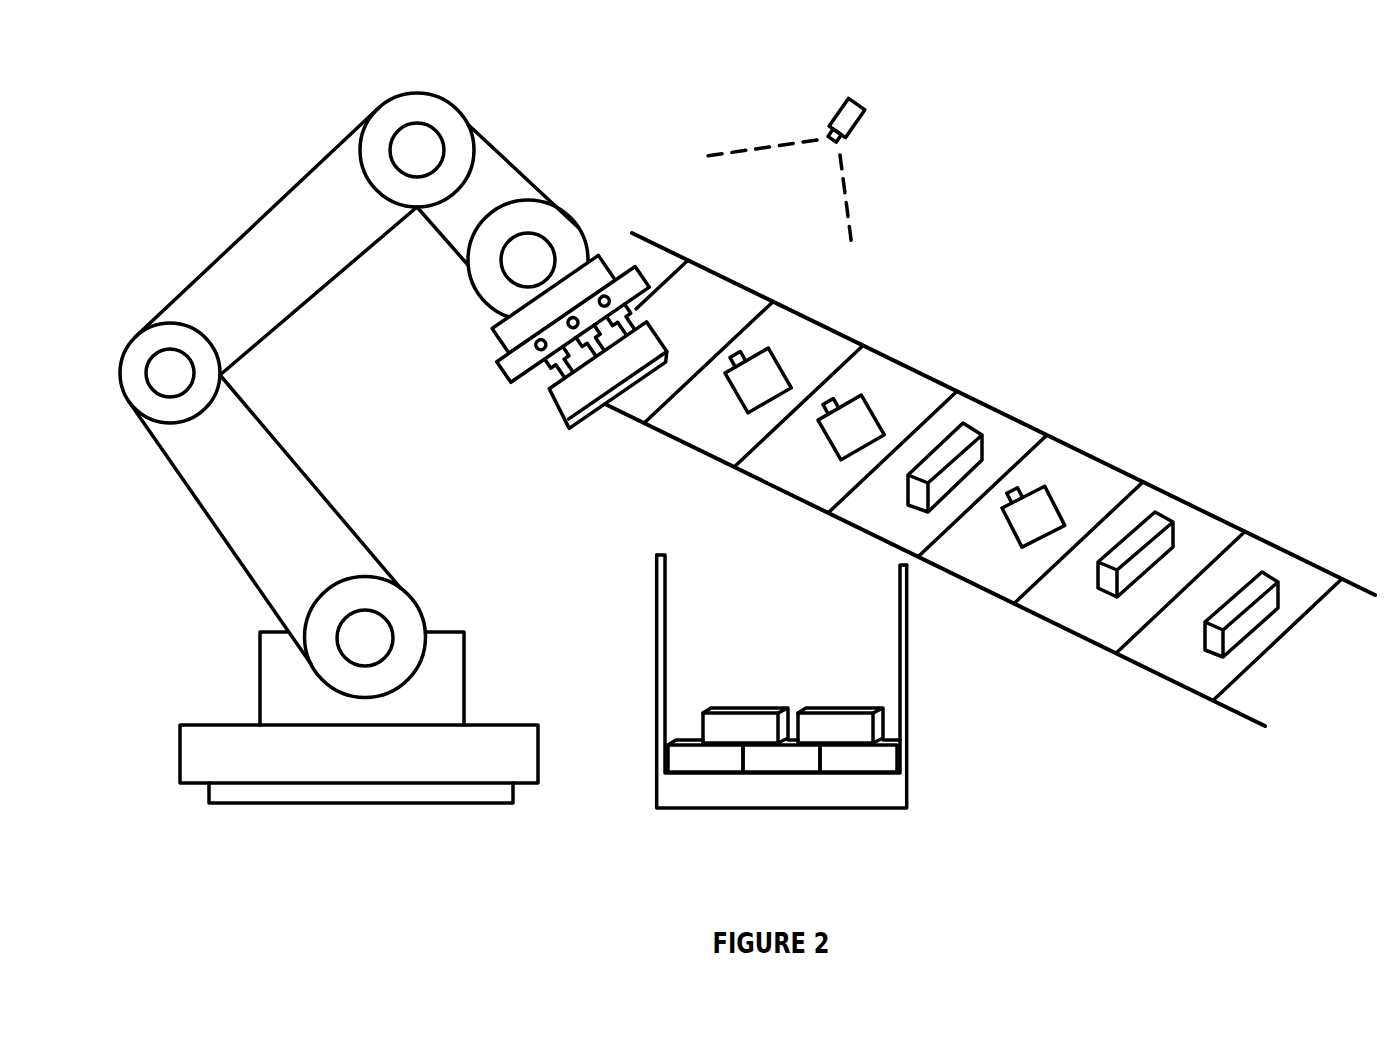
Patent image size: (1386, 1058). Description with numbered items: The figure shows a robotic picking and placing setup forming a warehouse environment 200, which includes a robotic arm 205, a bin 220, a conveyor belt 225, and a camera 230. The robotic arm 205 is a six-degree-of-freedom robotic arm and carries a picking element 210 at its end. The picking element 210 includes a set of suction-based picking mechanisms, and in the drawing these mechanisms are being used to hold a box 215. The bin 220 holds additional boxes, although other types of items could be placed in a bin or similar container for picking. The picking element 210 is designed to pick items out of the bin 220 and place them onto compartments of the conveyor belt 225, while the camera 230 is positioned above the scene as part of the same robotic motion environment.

The warehouse environment 200 is at (155, 85).
The robotic arm 205 is at (110, 365).
The picking element 210 is at (486, 367).
The box 215 is at (602, 418).
The bin 220 is at (645, 790).
The conveyor belt 225 is at (1290, 716).
The camera 230 is at (845, 85).